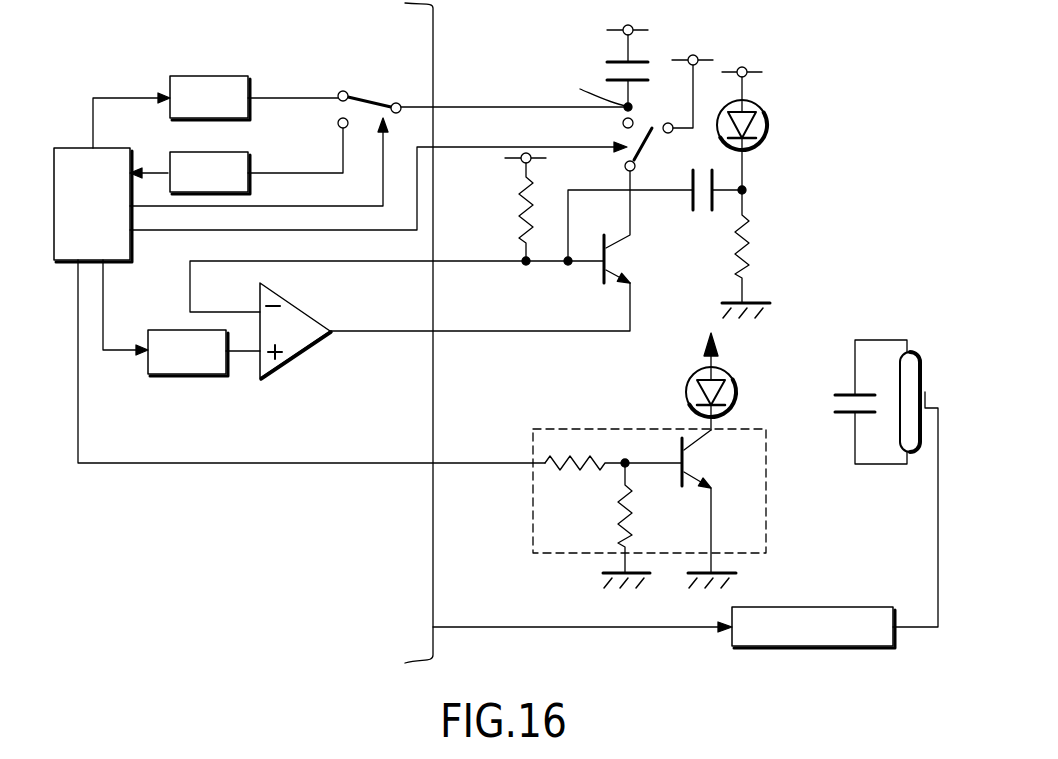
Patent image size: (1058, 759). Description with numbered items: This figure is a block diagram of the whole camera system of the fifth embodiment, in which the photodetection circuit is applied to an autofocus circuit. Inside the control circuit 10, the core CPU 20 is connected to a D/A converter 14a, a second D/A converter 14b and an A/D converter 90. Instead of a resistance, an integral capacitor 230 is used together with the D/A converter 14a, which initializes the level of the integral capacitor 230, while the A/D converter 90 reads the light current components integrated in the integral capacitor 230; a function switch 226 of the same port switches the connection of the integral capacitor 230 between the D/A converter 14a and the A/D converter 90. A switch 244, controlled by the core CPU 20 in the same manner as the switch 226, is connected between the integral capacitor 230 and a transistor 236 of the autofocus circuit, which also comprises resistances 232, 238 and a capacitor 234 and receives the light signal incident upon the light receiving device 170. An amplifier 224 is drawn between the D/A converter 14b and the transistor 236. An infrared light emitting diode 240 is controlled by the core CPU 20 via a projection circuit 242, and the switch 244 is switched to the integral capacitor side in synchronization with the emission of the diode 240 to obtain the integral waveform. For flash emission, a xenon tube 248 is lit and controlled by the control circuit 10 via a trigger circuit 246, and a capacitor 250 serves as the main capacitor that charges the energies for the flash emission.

The control circuit 10 is at (433, 33).
The D/A converter 14a is at (218, 76).
The D/A converter 14b is at (200, 374).
The core CPU 20 is at (62, 260).
The A/D converter 90 is at (255, 160).
The light receiving device 170 is at (770, 125).
The comparator 224 is at (305, 356).
The switch 226 is at (369, 94).
The integral capacitor 230 is at (645, 72).
The resistance 232 is at (758, 240).
The capacitor 234 is at (704, 212).
The transistor 236 is at (601, 273).
The resistance 238 is at (515, 197).
The infrared light emitting diode (IRED) 240 is at (685, 392).
The projection circuit 242 is at (767, 494).
The switch 244 is at (619, 156).
The trigger circuit 246 is at (852, 607).
The xenon (Xe) tube 248 is at (915, 354).
The capacitor 250 is at (833, 399).